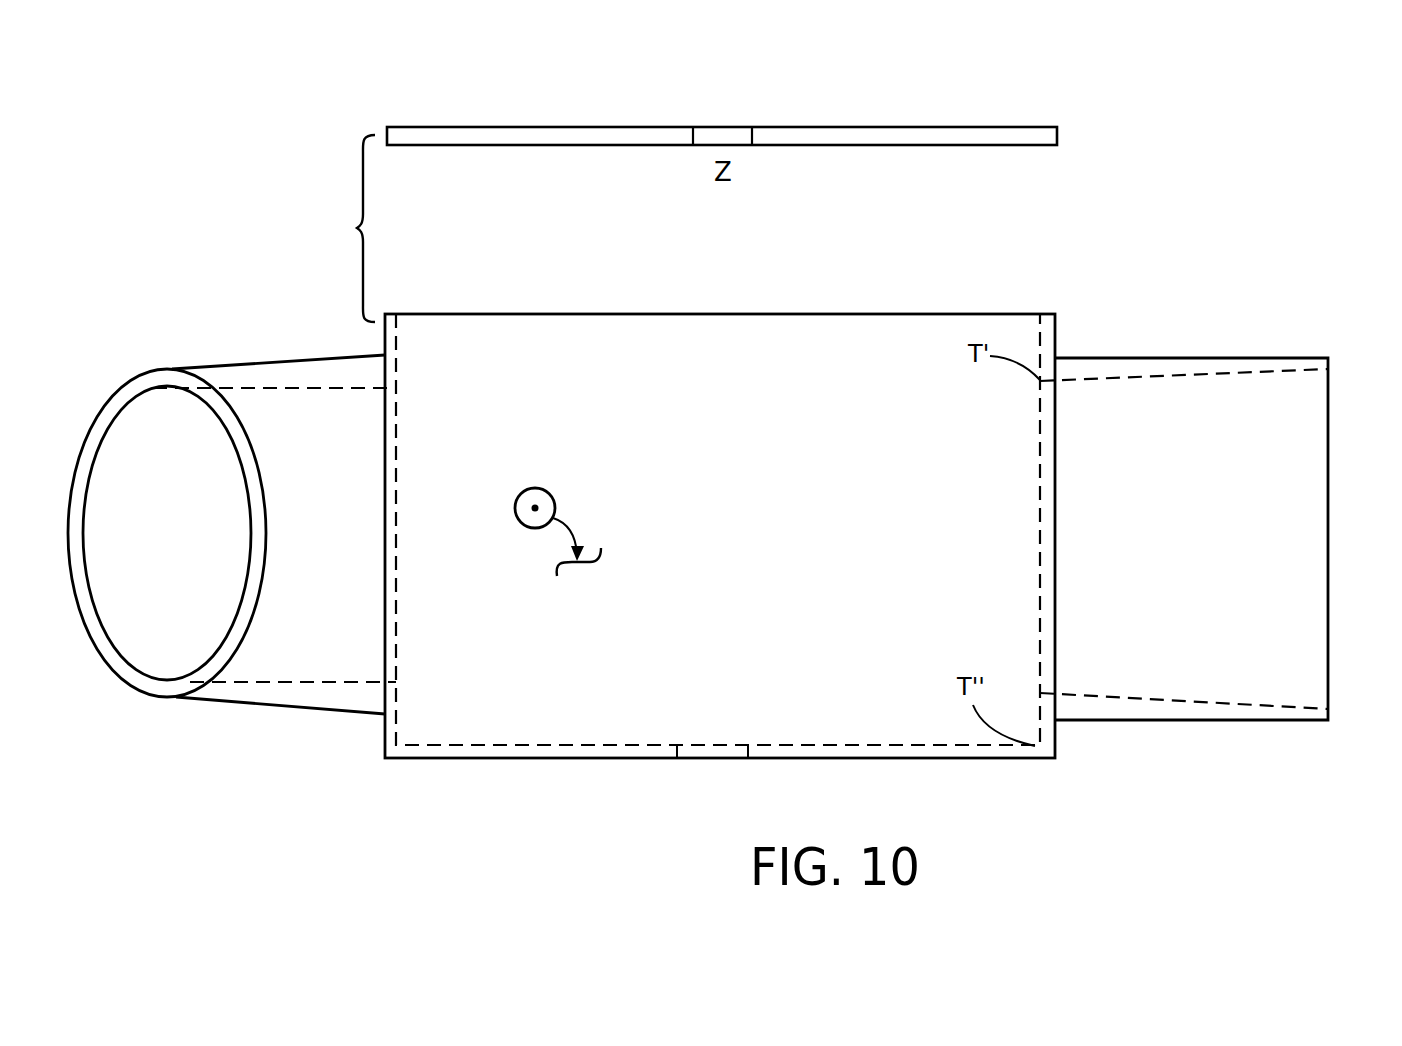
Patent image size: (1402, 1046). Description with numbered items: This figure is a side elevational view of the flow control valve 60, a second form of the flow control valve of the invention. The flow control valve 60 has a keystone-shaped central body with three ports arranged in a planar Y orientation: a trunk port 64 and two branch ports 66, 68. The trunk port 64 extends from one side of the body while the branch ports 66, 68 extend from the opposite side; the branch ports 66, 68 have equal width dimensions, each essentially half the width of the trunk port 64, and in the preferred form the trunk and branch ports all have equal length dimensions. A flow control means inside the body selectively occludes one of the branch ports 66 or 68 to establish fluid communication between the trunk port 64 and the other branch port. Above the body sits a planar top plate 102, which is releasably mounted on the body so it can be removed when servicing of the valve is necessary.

The flow control valve 60 is at (487, 764).
The trunk port 64 is at (258, 358).
The branch port 66 is at (1206, 505).
The branch port 68 is at (1232, 353).
The planar top plate 102 is at (1004, 122).